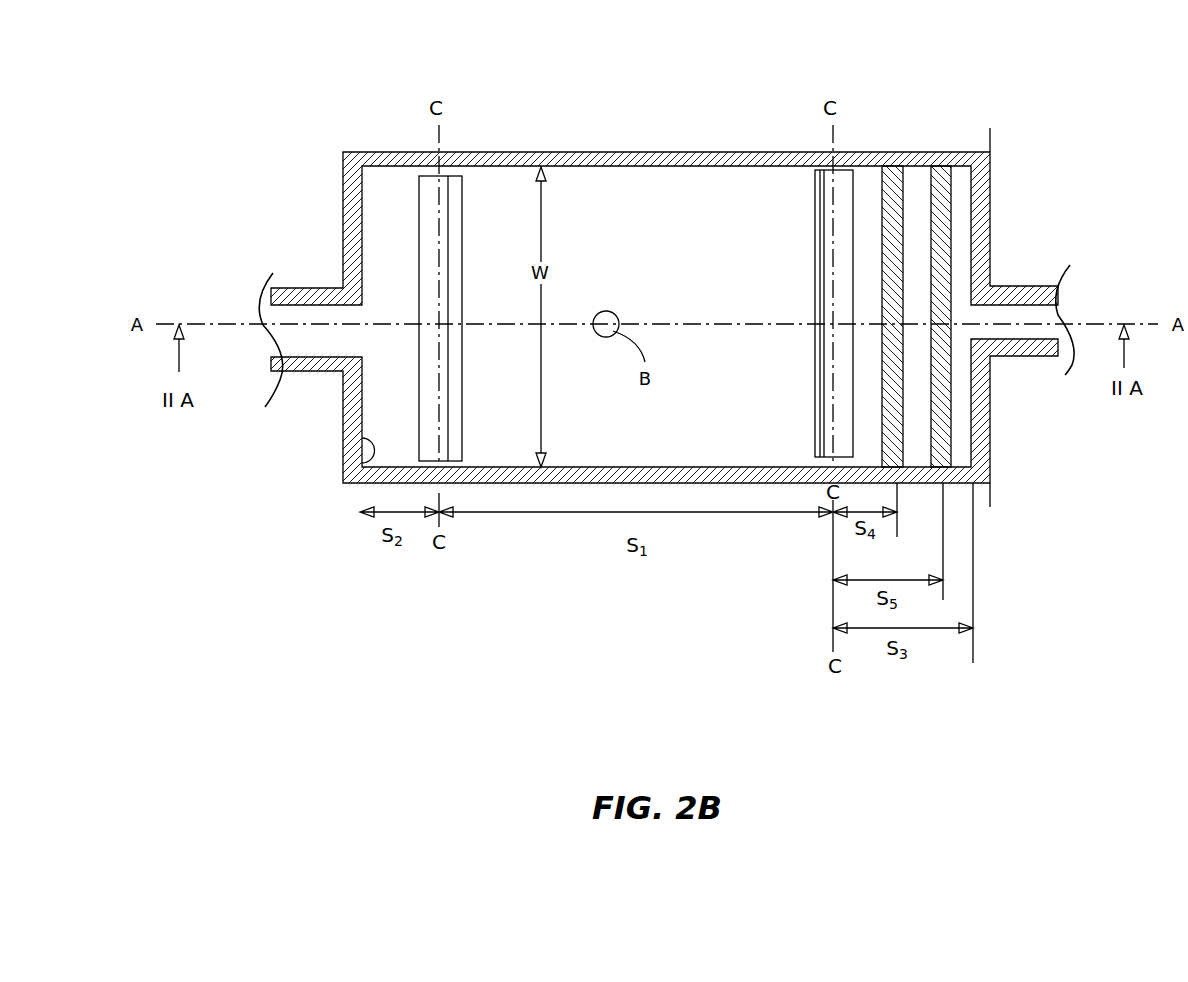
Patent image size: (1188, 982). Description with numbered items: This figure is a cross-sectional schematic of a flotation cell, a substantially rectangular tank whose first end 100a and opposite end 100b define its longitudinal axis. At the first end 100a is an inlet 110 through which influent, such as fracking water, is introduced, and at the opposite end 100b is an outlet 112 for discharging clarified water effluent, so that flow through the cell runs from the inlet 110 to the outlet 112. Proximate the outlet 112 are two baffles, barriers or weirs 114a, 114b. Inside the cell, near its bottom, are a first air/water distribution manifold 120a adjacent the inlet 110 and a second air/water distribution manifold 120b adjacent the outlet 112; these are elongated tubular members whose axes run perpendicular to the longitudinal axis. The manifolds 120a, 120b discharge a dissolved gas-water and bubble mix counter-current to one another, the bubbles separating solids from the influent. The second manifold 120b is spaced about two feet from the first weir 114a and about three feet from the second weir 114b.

The first end 100a is at (360, 466).
The opposite end 100b is at (976, 437).
The inlet 110 is at (232, 282).
The outlet 112 is at (1080, 285).
The first weir 114a is at (884, 186).
The second weir 114b is at (932, 176).
The first air/water distribution manifold 120a is at (462, 231).
The second air/water distribution manifold 120b is at (815, 220).